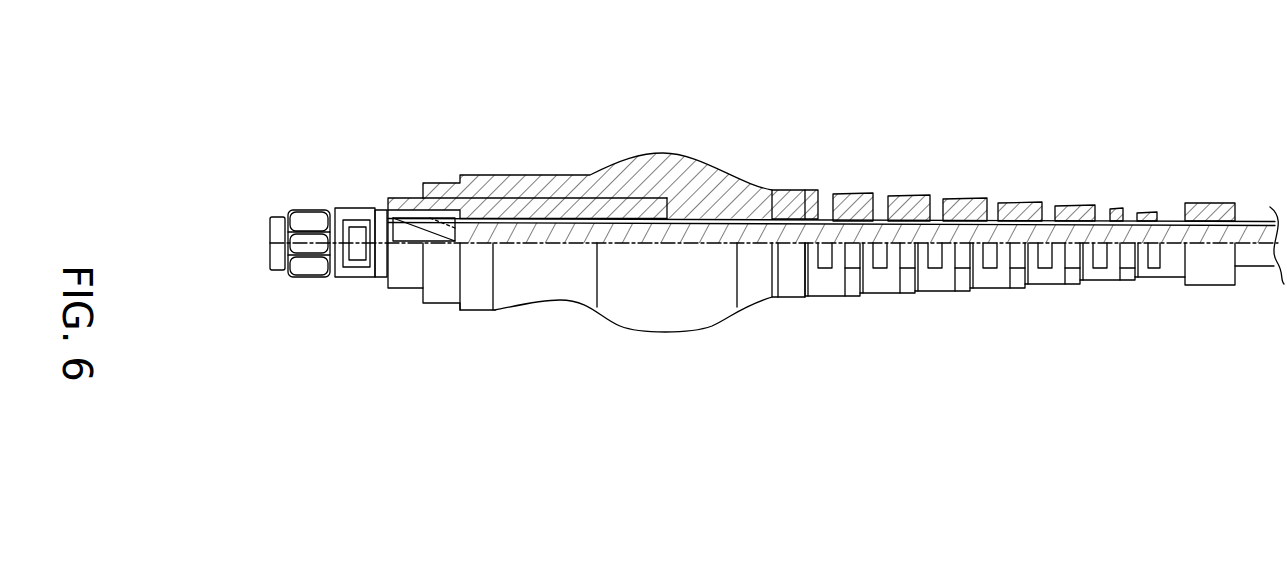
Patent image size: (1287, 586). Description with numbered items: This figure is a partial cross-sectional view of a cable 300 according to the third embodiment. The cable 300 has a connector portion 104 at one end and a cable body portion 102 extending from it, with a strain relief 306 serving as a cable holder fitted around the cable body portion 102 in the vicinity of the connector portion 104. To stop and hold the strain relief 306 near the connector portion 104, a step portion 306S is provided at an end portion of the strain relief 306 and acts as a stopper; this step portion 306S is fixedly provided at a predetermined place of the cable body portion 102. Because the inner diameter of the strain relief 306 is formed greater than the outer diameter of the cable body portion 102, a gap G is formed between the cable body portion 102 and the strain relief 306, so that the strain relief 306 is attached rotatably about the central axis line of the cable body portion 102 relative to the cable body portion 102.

The cable 300 is at (1157, 482).
The connector portion 104 is at (408, 266).
The strain relief 306 is at (685, 155).
The gap G is at (773, 191).
The cable body portion 102 is at (965, 199).
The step portion 306S is at (1212, 202).